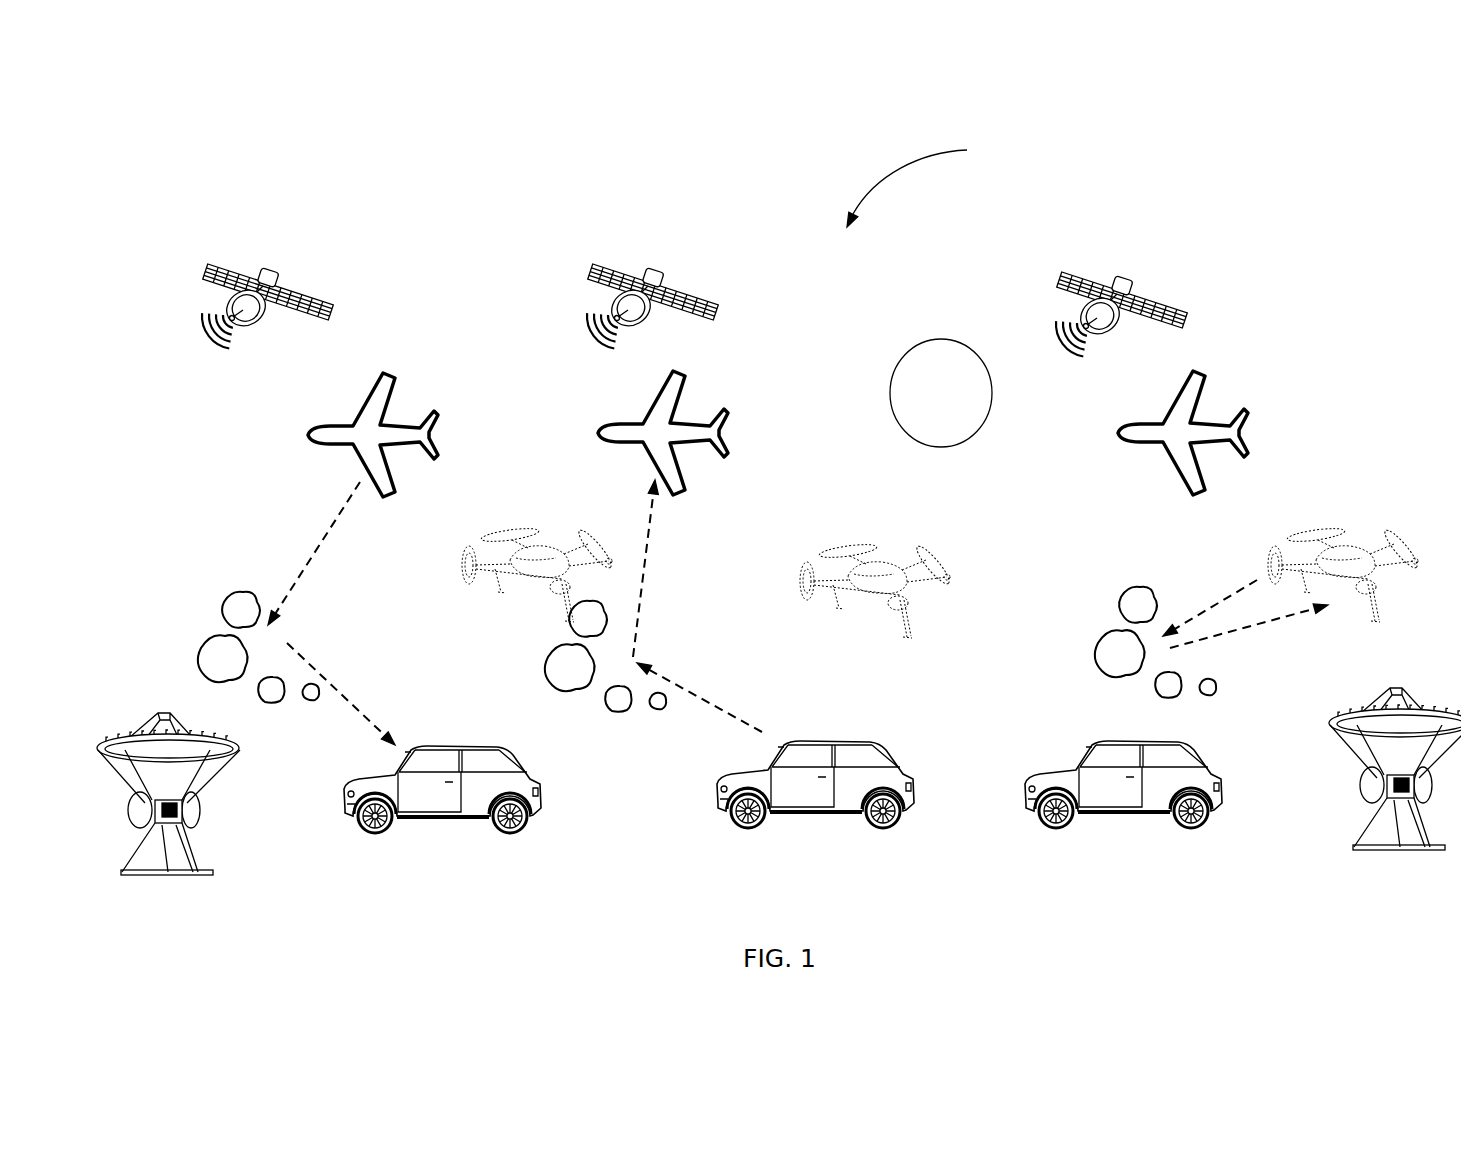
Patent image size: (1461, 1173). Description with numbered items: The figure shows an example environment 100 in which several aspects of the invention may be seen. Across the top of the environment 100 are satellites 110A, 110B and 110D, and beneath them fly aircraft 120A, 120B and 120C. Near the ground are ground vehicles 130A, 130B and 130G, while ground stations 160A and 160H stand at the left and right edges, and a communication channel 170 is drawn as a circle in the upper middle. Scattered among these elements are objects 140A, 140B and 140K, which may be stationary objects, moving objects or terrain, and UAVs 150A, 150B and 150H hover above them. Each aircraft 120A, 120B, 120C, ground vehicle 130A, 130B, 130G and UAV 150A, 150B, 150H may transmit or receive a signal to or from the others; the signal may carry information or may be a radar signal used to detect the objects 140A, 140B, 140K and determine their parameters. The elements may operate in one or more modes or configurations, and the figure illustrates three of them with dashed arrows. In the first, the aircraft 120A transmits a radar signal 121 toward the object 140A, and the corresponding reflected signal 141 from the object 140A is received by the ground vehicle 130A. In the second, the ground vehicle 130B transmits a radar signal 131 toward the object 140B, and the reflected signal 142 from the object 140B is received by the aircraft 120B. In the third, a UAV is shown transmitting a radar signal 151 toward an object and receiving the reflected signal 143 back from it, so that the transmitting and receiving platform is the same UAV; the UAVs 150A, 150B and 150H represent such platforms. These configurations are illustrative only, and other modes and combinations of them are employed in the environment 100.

The environment 100 is at (942, 183).
The satellite 110A is at (300, 285).
The satellite 110B is at (698, 290).
The satellite 110D is at (1148, 292).
The aircraft 120A is at (430, 403).
The aircraft 120B is at (727, 410).
The aircraft 120C is at (1240, 410).
The ground vehicle 130A is at (473, 745).
The ground vehicle 130B is at (866, 738).
The ground vehicle 130G is at (1037, 760).
The object 140A is at (240, 590).
The object 140B is at (570, 692).
The object 140K is at (1141, 598).
The UAV 150A is at (556, 545).
The UAV 150B is at (912, 548).
The UAV 150H is at (1357, 535).
The ground station 160A is at (165, 712).
The ground station 160H is at (1400, 688).
The communication channel 170 is at (920, 406).
The radar signal 121 is at (315, 565).
The radar signal 131 is at (692, 690).
The reflected signal 141 is at (341, 693).
The reflected signal 142 is at (643, 572).
The reflected signal 143 is at (1278, 617).
The radar signal 151 is at (1212, 605).